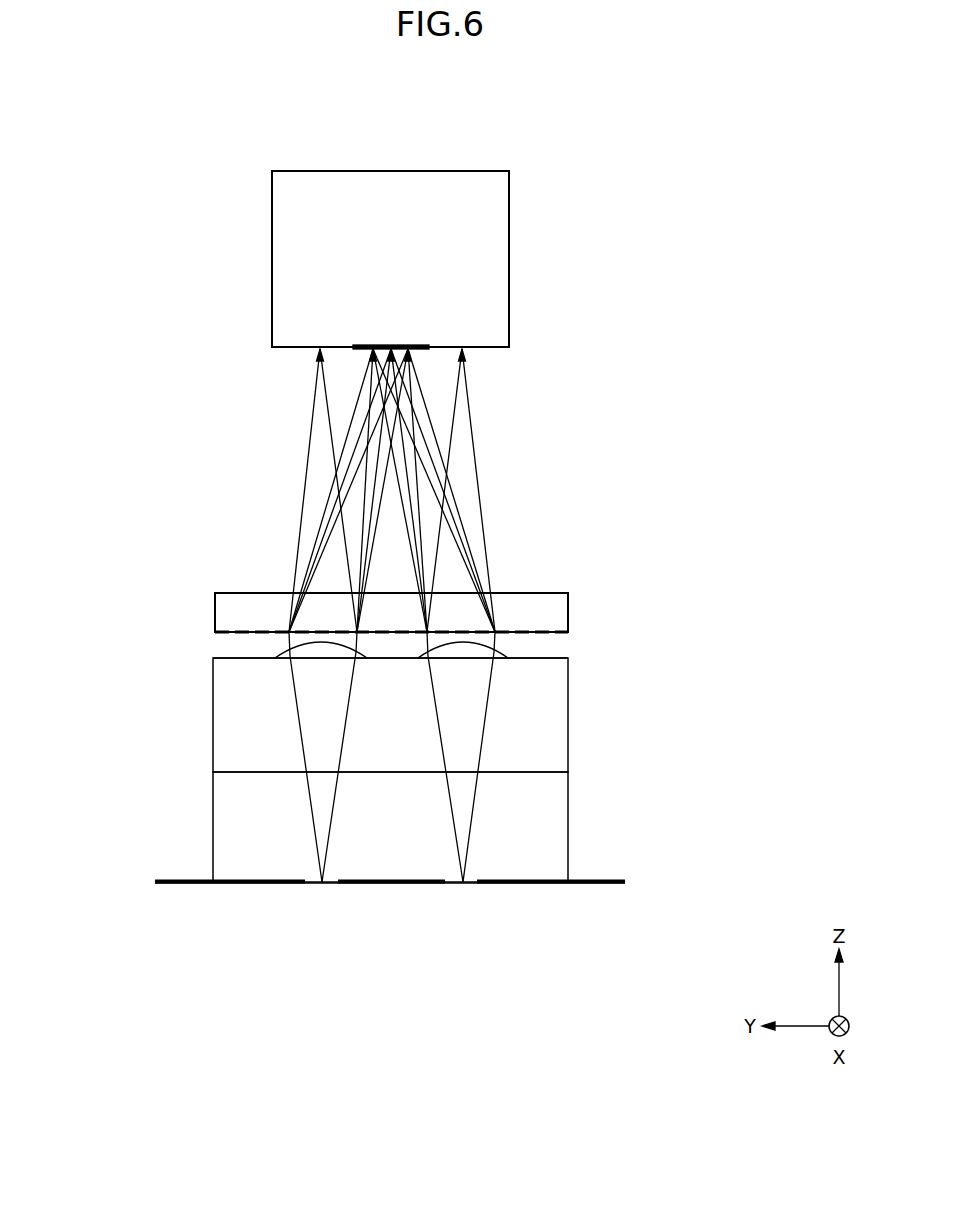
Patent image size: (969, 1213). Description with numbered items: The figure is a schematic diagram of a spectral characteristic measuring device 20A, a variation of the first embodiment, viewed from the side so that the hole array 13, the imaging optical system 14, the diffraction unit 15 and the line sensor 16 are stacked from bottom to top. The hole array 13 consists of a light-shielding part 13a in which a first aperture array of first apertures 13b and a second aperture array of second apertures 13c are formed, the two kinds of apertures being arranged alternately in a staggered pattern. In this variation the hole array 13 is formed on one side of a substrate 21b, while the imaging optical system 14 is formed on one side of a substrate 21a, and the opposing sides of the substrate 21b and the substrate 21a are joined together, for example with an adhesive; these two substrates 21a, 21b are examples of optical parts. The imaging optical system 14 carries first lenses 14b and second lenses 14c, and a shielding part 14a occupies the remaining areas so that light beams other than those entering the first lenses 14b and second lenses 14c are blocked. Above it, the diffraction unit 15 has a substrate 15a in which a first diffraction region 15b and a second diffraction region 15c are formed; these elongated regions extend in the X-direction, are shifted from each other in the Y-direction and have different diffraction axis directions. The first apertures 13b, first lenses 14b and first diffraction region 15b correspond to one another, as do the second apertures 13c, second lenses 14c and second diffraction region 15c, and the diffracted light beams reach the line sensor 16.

The spectral characteristic measuring device 20A is at (82, 102).
The line sensor 16 is at (509, 260).
The diffraction unit 15 is at (391, 490).
The substrate 15a is at (243, 593).
The first diffraction region 15b is at (327, 617).
The second diffraction region 15c is at (455, 618).
The imaging optical system 14 is at (342, 672).
The shielding part 14a is at (240, 657).
The first lenses 14b is at (320, 653).
The second lenses 14c is at (468, 655).
The substrate 21a is at (556, 714).
The substrate 21b is at (556, 824).
The hole array 13 is at (390, 939).
The light-shielding part 13a is at (183, 885).
The first apertures 13b is at (322, 885).
The second apertures 13c is at (535, 913).